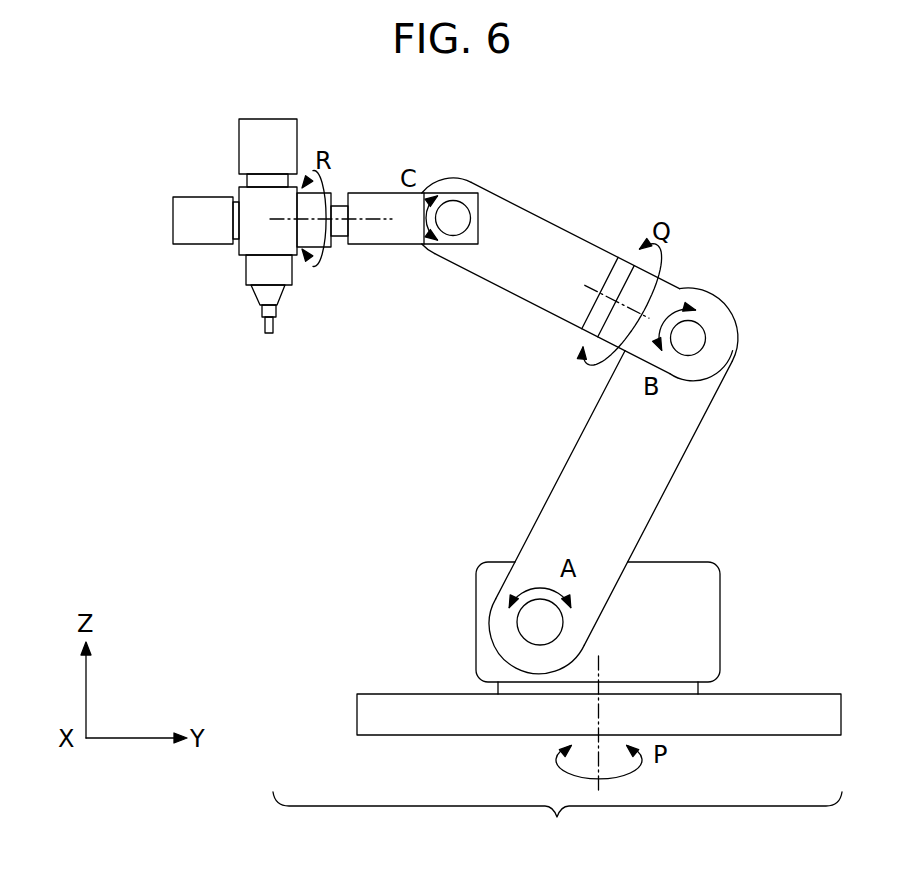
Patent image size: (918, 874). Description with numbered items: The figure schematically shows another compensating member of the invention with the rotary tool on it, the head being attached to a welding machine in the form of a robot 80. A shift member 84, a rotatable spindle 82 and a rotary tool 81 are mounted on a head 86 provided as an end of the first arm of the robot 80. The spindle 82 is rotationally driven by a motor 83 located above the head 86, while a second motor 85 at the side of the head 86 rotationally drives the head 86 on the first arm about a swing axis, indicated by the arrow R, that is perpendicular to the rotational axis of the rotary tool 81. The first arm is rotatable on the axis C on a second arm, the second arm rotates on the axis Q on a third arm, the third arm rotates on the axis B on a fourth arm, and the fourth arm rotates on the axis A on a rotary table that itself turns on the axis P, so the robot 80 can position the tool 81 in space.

The robot 80 is at (557, 515).
The rotary tool 81 is at (263, 327).
The rotatable spindle 82 is at (262, 293).
The motor 83 is at (249, 143).
The shift member 84 is at (252, 268).
The motor 85 is at (182, 222).
The head 86 is at (253, 197).